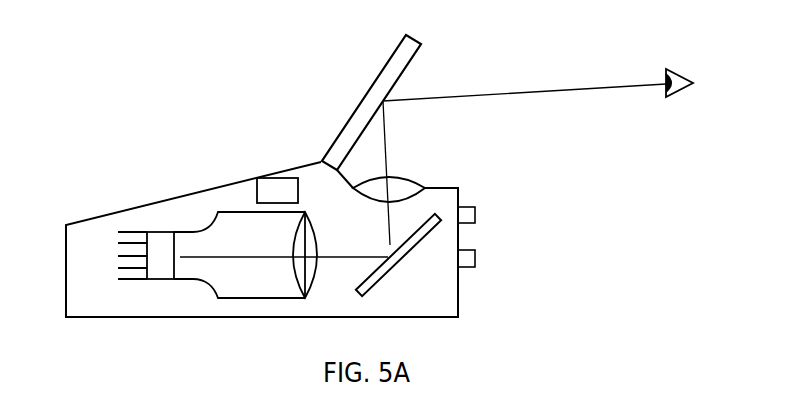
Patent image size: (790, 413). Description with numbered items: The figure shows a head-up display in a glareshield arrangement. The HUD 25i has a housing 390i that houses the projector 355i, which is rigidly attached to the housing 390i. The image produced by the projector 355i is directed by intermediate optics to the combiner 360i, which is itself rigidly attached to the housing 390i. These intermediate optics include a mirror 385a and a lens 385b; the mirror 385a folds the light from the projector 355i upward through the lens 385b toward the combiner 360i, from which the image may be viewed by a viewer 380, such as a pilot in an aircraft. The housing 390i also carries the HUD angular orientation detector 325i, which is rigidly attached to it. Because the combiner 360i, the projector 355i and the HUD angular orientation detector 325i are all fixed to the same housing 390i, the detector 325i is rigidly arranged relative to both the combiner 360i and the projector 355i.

The HUD 25i is at (191, 69).
The housing 390i is at (212, 190).
The HUD angular orientation detector 325i is at (280, 183).
The projector 355i is at (203, 277).
The combiner 360i is at (392, 63).
The lens 385b is at (397, 181).
The mirror 385a is at (413, 245).
The viewer 380 is at (677, 90).